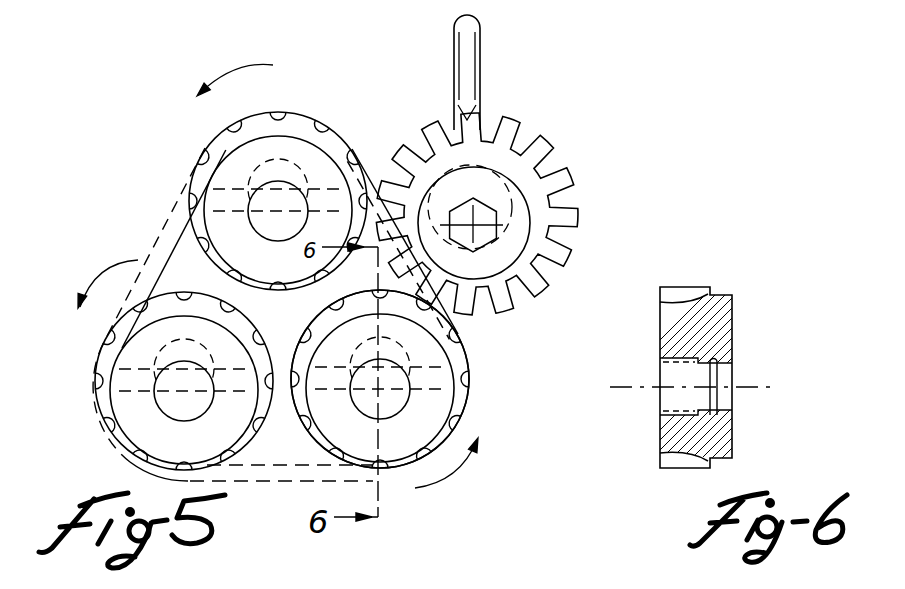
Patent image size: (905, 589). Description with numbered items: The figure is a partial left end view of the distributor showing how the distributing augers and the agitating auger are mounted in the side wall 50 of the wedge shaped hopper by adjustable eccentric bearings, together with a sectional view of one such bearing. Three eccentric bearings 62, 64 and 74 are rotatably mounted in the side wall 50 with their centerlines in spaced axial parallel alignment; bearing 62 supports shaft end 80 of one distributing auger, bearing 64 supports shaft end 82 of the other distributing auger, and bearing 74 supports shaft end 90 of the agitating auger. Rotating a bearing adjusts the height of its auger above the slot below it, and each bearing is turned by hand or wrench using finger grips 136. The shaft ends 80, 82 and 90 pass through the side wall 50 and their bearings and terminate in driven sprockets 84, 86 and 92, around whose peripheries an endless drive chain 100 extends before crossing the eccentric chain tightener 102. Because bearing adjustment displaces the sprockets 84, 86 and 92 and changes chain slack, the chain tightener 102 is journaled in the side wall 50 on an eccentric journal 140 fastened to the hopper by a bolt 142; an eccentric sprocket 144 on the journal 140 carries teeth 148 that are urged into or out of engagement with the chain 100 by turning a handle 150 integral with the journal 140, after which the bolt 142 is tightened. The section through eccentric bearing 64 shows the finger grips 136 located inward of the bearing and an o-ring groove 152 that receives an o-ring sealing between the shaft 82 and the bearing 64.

In FIG. 5, the side wall 50 is at (290, 321).
In FIG. 5, the eccentric bearing 62 is at (168, 308).
In FIG. 5, the eccentric bearing 64 is at (393, 308).
In FIG. 6, the eccentric bearing 64 is at (687, 315).
In FIG. 5, the eccentric bearing 74 is at (268, 115).
In FIG. 5, the shaft end 80 is at (199, 401).
In FIG. 5, the shaft end 82 is at (395, 399).
In FIG. 5, the driven sprocket 84 is at (150, 355).
In FIG. 5, the driven sprocket 86 is at (408, 432).
In FIG. 5, the shaft end 90 is at (293, 221).
In FIG. 5, the driven sprocket 92 is at (247, 168).
In FIG. 5, the endless drive chain 100 is at (202, 188).
In FIG. 5, the eccentric chain tightener 102 is at (547, 121).
In FIG. 5, the finger grips 136 is at (205, 155).
In FIG. 6, the finger grips 136 is at (677, 290).
In FIG. 5, the eccentric journal 140 is at (507, 252).
In FIG. 5, the bolt 142 is at (498, 215).
In FIG. 5, the eccentric sprocket 144 is at (523, 163).
In FIG. 5, the teeth 148 is at (428, 118).
In FIG. 5, the handle 150 is at (467, 70).
In FIG. 6, the o-ring groove 152 is at (720, 355).